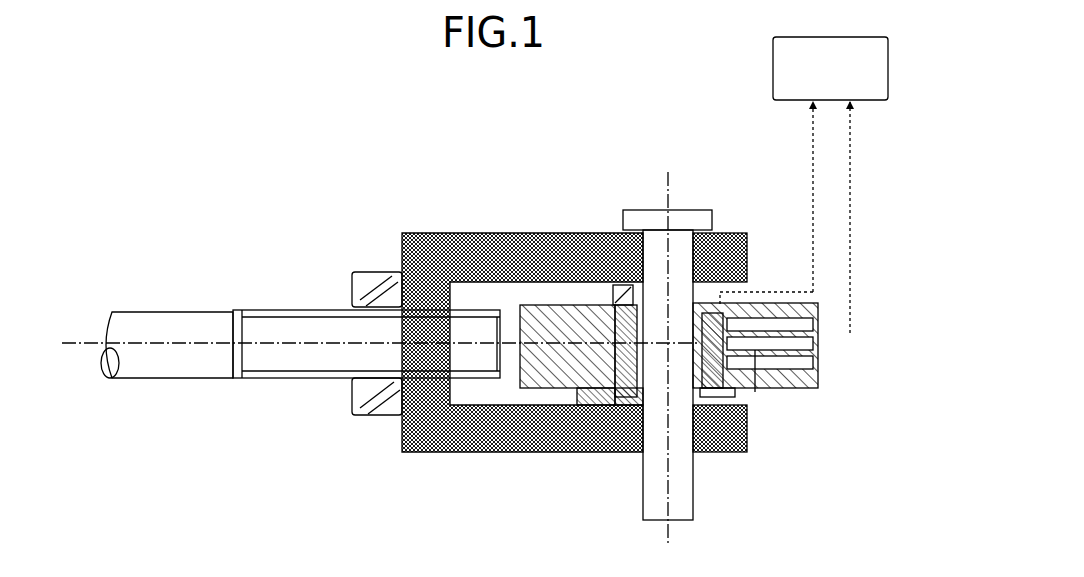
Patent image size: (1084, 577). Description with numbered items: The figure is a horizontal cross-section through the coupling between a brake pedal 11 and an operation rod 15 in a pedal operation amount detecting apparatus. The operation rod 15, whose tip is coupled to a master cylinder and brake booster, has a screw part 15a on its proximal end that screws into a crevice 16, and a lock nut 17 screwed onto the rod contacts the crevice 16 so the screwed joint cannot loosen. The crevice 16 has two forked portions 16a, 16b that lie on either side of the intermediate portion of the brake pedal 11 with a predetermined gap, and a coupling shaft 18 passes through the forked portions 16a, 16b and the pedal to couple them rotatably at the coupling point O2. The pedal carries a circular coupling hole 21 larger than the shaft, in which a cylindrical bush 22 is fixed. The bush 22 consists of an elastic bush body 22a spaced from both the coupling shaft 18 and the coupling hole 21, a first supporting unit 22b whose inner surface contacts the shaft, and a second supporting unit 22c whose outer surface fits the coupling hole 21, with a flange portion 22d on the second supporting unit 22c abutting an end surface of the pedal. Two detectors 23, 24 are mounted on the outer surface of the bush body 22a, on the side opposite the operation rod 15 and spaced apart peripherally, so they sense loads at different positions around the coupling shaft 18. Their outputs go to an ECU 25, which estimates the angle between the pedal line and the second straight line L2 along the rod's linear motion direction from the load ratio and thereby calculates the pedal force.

The brake pedal 11 is at (813, 357).
The operation rod 15 is at (152, 321).
The screw part 15a is at (289, 379).
The crevice 16 is at (450, 453).
The forked portion 16a is at (748, 257).
The forked portion 16b is at (748, 431).
The lock nut 17 is at (374, 416).
The coupling shaft 18 is at (663, 521).
The coupling hole 21 is at (820, 326).
The bush 22 is at (635, 335).
The bush body 22a is at (578, 232).
The first supporting unit 22b is at (618, 232).
The second supporting unit 22c is at (612, 405).
The flange portion 22d is at (592, 405).
The detector 23 is at (820, 363).
The detector 24 is at (820, 345).
The electronic control unit (ECU) 25 is at (814, 37).
The second straight line L2 is at (104, 349).
The coupling point O2 is at (668, 530).